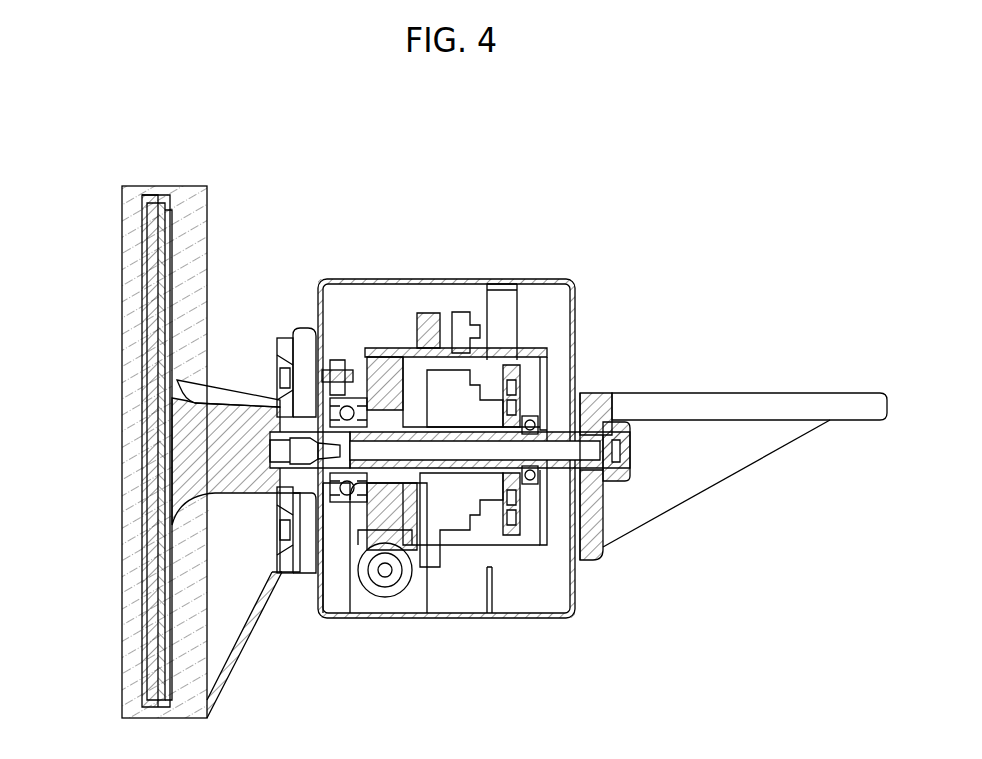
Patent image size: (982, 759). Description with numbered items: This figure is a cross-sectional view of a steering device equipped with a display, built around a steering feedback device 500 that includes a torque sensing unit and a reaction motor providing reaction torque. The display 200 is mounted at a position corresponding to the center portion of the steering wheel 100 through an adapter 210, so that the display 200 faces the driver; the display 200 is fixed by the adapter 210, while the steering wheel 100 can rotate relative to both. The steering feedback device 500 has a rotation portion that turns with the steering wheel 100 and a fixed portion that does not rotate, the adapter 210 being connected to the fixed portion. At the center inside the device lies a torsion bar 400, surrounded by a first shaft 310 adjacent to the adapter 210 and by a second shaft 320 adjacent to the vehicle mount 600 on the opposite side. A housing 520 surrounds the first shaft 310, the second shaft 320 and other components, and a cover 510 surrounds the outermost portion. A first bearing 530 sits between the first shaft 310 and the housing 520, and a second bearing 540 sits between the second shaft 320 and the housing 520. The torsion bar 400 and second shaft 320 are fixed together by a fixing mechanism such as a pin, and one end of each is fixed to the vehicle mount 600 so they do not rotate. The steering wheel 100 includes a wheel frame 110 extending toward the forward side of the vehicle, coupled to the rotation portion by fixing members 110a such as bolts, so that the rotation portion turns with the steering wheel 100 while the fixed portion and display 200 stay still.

The steering wheel 100 is at (140, 222).
The display 200 is at (163, 352).
The adapter 210 is at (190, 452).
The wheel frame 110 is at (240, 653).
The fixing member 110a is at (283, 535).
The first shaft 310 is at (307, 403).
The second shaft 320 is at (600, 472).
The torsion bar 400 is at (600, 405).
The steering feedback device 500 is at (438, 262).
The cover 510 is at (365, 618).
The housing 520 is at (425, 567).
The first bearing 530 is at (337, 370).
The second bearing 540 is at (530, 418).
The vehicle mount 600 is at (723, 405).